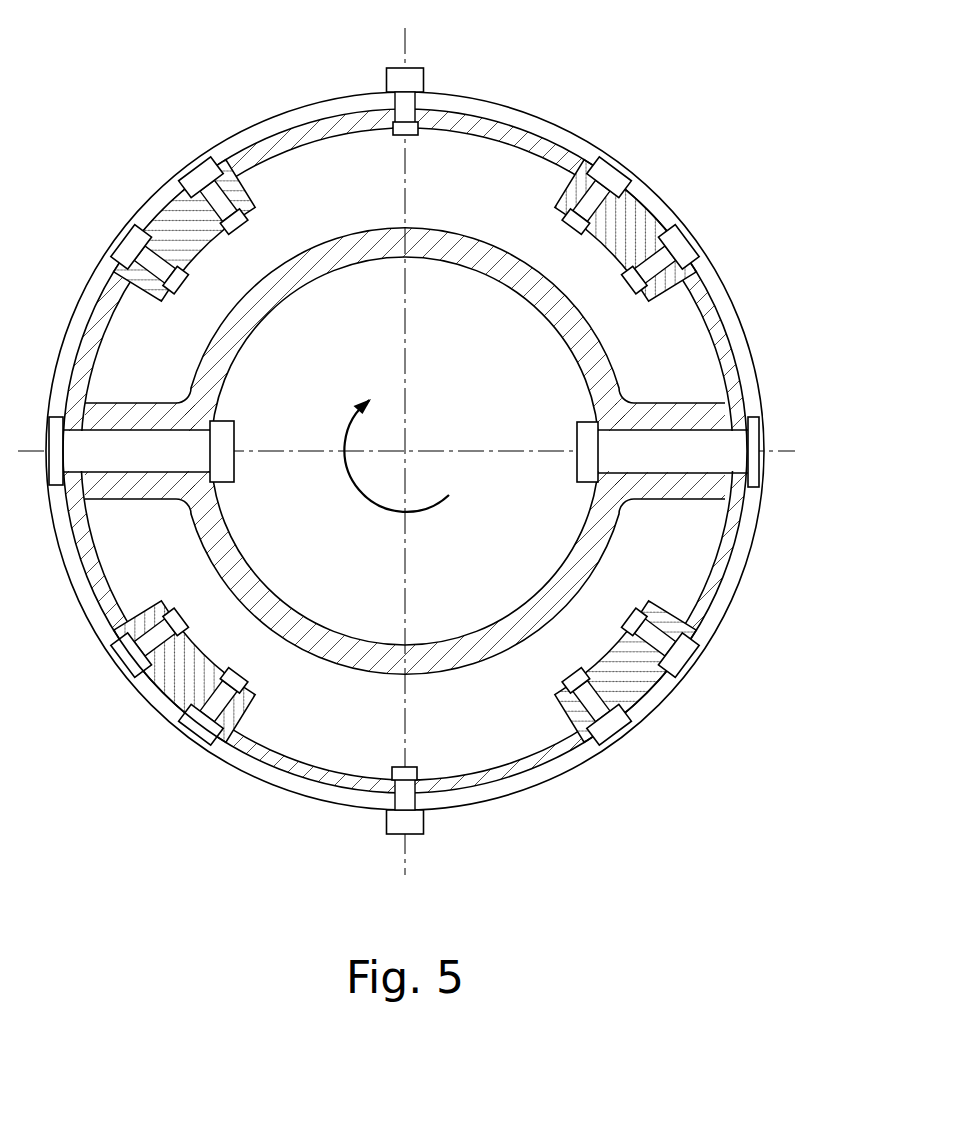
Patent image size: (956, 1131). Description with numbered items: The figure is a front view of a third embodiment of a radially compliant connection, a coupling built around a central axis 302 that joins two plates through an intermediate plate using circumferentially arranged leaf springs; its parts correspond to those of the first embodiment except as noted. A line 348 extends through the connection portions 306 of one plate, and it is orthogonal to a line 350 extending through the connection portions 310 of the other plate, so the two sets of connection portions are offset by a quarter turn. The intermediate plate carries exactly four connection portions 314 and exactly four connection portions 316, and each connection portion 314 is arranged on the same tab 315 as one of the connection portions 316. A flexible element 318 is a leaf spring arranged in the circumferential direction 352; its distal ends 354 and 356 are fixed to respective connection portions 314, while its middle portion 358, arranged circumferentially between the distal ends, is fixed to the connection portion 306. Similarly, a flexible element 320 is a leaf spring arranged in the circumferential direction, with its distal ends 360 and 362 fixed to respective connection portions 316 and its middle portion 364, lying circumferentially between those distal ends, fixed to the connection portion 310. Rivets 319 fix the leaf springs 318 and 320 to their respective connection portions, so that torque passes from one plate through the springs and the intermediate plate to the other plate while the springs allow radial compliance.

The axis 302 is at (405, 451).
The connection portion 306 is at (440, 98).
The connection portion 310 is at (757, 415).
The connection portion 314 is at (233, 180).
The tab 315 is at (622, 232).
The connection portion 316 is at (688, 268).
The flexible element 318 is at (276, 136).
The rivet 319 is at (620, 732).
The flexible element 320 is at (734, 330).
The line 348 is at (407, 357).
The line 350 is at (527, 451).
The circumferential direction 352 is at (345, 428).
The distal end 354 is at (182, 183).
The distal end 356 is at (632, 175).
The middle portion 358 is at (370, 120).
The distal end 360 is at (673, 673).
The distal end 362 is at (686, 223).
The middle portion 364 is at (762, 491).